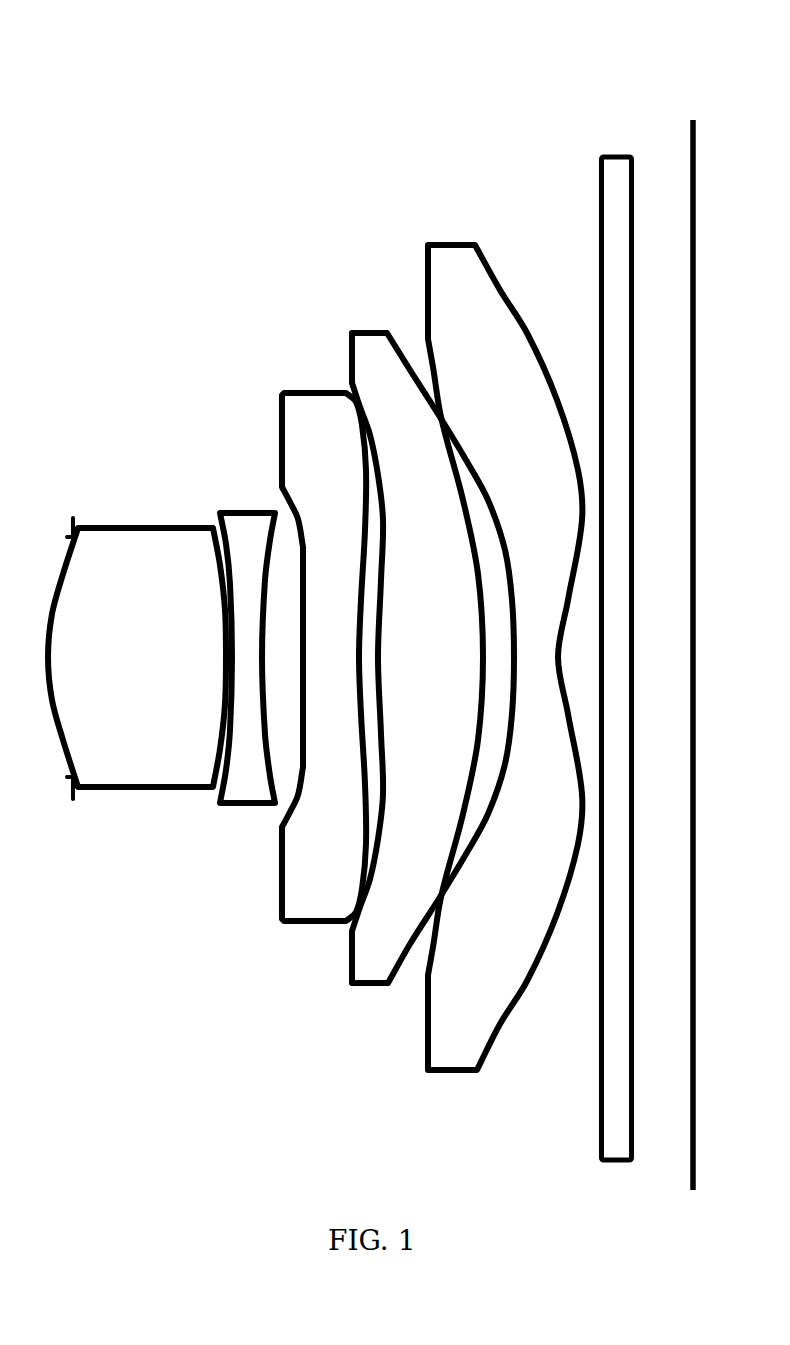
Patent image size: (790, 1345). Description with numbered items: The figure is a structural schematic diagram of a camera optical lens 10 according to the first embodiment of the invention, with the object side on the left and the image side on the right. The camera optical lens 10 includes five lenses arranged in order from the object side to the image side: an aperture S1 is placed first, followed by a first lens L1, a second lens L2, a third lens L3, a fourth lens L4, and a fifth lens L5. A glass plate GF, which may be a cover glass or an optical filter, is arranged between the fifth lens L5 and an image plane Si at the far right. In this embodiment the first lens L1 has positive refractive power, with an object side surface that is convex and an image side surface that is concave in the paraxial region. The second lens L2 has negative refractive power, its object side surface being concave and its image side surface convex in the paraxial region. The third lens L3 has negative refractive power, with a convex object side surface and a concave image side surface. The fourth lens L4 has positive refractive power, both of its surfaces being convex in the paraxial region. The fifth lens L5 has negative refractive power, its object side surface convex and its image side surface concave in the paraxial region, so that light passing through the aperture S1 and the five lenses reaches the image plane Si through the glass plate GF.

The camera optical lens 10 is at (360, 34).
The aperture S1 is at (73, 644).
The first lens L1 is at (137, 640).
The second lens L2 is at (247, 642).
The third lens L3 is at (324, 642).
The fourth lens L4 is at (433, 644).
The fifth lens L5 is at (505, 642).
The glass plate GF is at (617, 642).
The image plane Si is at (688, 642).